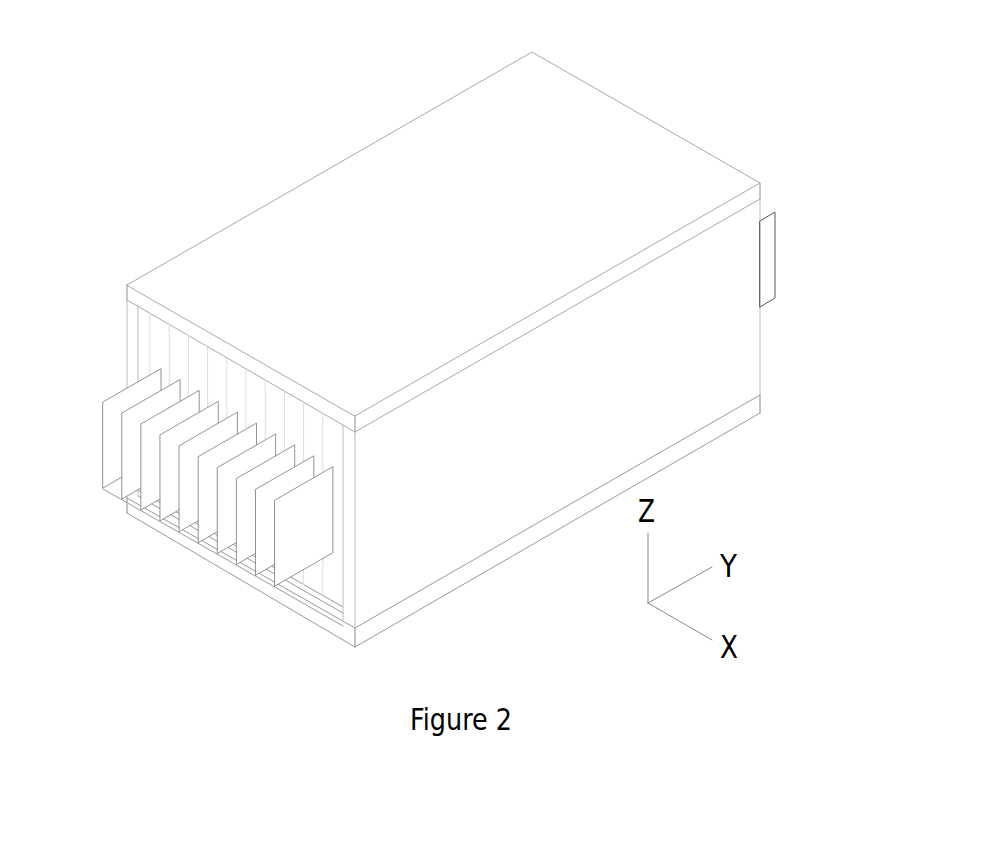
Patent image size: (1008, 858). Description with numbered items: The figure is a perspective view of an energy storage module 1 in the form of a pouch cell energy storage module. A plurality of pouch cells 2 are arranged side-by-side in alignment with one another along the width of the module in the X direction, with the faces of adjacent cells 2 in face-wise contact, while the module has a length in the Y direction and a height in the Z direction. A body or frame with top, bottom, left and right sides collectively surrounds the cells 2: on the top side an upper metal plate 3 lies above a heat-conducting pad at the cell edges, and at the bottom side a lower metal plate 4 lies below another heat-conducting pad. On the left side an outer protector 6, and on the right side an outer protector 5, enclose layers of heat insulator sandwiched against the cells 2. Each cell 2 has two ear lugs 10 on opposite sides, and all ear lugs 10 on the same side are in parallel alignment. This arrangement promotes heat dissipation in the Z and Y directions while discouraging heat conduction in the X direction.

The energy storage module 1 is at (459, 330).
The pouch cells 2 is at (200, 358).
The upper metal plate 3 is at (621, 131).
The lower metal plate 4 is at (472, 571).
The outer protector 5 is at (133, 340).
The outer protector 6 is at (735, 363).
The ear lugs 10 is at (295, 547).